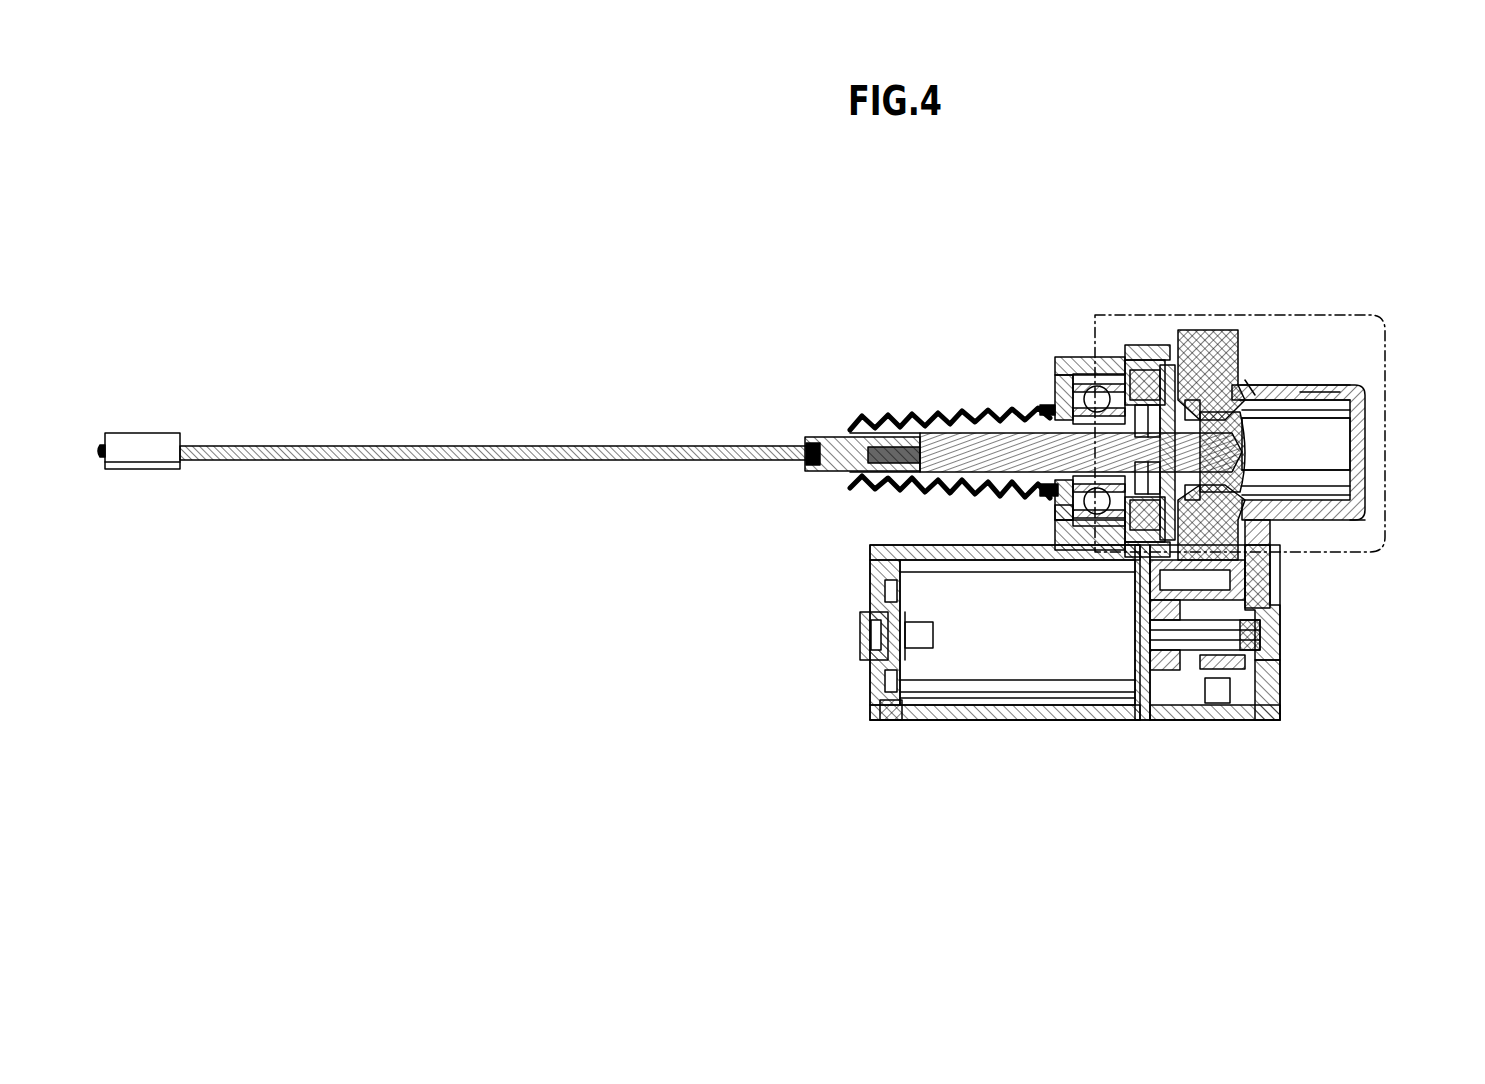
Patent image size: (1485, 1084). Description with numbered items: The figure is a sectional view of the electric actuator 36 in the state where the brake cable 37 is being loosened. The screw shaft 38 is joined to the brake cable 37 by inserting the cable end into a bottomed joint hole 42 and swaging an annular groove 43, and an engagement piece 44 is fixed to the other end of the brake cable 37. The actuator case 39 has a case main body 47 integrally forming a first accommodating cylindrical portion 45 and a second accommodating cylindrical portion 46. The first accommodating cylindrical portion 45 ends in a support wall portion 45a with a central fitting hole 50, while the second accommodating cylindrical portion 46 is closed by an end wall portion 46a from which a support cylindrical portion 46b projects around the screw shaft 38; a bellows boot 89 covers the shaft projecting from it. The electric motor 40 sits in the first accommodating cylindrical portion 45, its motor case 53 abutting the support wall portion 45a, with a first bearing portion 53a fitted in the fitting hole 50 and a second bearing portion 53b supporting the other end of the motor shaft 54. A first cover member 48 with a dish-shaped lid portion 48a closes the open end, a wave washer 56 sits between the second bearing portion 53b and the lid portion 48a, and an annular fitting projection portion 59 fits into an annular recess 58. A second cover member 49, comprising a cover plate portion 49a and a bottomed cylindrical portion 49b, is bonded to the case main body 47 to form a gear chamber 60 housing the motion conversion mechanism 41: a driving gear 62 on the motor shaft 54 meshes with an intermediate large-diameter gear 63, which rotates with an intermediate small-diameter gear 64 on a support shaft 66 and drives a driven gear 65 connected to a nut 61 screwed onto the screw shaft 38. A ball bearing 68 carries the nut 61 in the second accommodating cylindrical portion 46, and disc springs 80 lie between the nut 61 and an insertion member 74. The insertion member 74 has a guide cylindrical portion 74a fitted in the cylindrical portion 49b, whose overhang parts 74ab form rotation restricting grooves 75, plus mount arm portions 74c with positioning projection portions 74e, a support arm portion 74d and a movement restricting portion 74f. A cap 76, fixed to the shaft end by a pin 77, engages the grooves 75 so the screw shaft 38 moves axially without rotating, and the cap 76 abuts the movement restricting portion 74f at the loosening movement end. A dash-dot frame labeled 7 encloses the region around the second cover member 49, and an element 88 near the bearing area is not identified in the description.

The brake actuator 7 is at (1265, 295).
The electric actuator 36 is at (1254, 372).
The brake cable 37 is at (510, 447).
The screw shaft 38 is at (960, 433).
The actuator case 39 is at (1172, 712).
The electric motor 40 is at (1017, 632).
The motion conversion mechanism 41 is at (1242, 690).
The joint hole 42 is at (870, 440).
The annular groove 43 is at (816, 443).
The engagement piece 44 is at (146, 440).
The first accommodating cylindrical portion 45 is at (975, 720).
The support wall portion 45a is at (1152, 712).
The second accommodating cylindrical portion 46 is at (1150, 398).
The end wall portion 46a is at (1050, 406).
The support cylindrical portion 46b is at (975, 492).
The case main body 47 is at (1090, 722).
The first cover member 48 is at (866, 715).
The lid portion 48a is at (872, 587).
The second cover member 49 is at (1226, 313).
The cover plate portion 49a is at (1270, 562).
The bottomed cylindrical portion 49b is at (1322, 385).
The fitting hole 50 is at (1130, 650).
The motor case 53 is at (1015, 702).
The first bearing portion 53a is at (1136, 622).
The second bearing portion 53b is at (925, 634).
The motor shaft 54 is at (1275, 642).
The wave washer 56 is at (868, 640).
The annular recess 58 is at (904, 720).
The fitting projection portion 59 is at (878, 547).
The gear chamber 60 is at (1242, 712).
The nut 61 is at (1135, 400).
The driving gear 62 is at (1248, 660).
The intermediate large-diameter gear 63 is at (1268, 604).
The intermediate small-diameter gear 64 is at (1296, 444).
The driven gear 65 is at (1158, 365).
The support shaft 66 is at (1252, 584).
The ball bearing 68 is at (1062, 510).
The insertion member 74 is at (1352, 388).
The guide cylindrical portion 74a is at (1284, 392).
The overhang part 74ab is at (1352, 509).
The mount arm portion 74c is at (1252, 396).
The support arm portion 74d is at (1272, 490).
The positioning projection portion 74e is at (1195, 400).
The movement restricting portion 74f is at (1190, 380).
The rotation restricting groove 75 is at (1362, 518).
The cap 76 is at (1245, 414).
The pin 77 is at (1238, 460).
The disc spring 80 is at (1066, 392).
The bearing holder 88 is at (1070, 372).
The bellows boot 89 is at (890, 447).